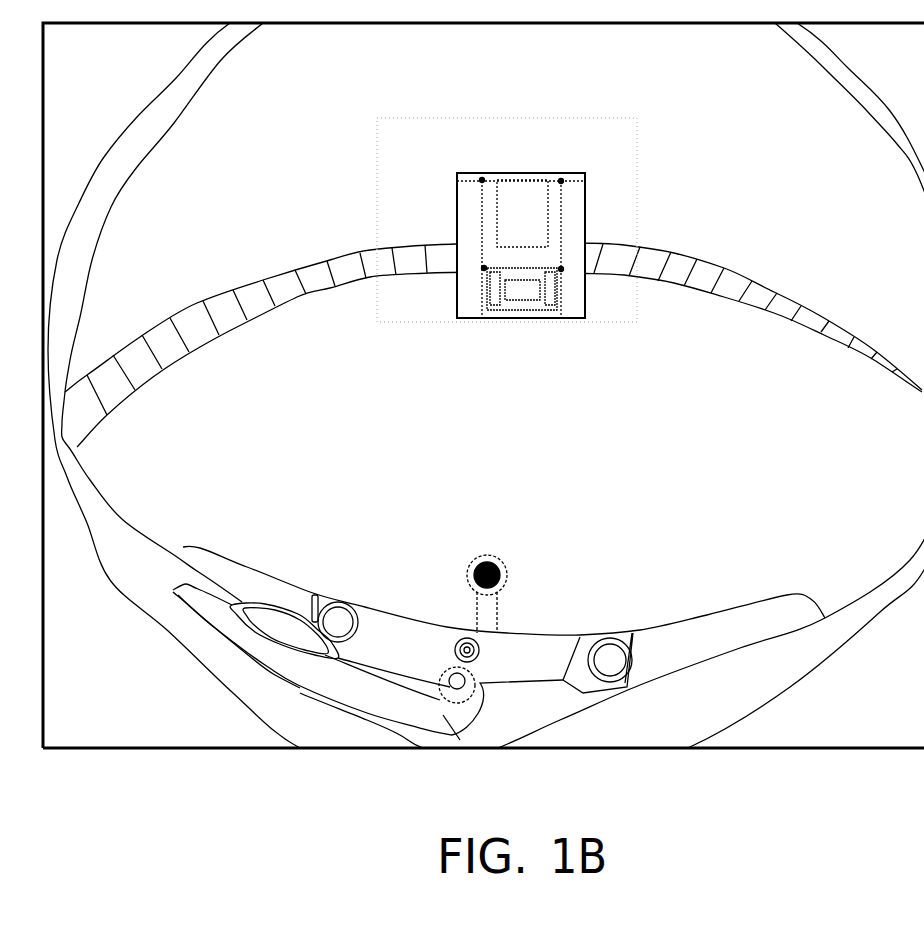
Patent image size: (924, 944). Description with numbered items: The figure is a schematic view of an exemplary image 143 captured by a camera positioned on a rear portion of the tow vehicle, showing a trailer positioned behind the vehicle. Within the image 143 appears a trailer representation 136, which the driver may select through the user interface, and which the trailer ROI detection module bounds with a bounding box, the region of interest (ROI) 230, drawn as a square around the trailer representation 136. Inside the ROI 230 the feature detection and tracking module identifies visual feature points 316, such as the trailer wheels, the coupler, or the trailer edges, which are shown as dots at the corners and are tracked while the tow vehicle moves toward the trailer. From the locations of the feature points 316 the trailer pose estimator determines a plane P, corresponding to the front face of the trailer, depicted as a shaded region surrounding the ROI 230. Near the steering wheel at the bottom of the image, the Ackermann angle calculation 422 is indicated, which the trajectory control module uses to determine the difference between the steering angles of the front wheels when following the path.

The image 143 is at (127, 57).
The plane P is at (388, 180).
The region of interest (ROI) 230 is at (457, 217).
The trailer representation 136 is at (482, 255).
The visual feature points 316 is at (561, 179).
The Ackermann angle calculation 422 is at (473, 570).